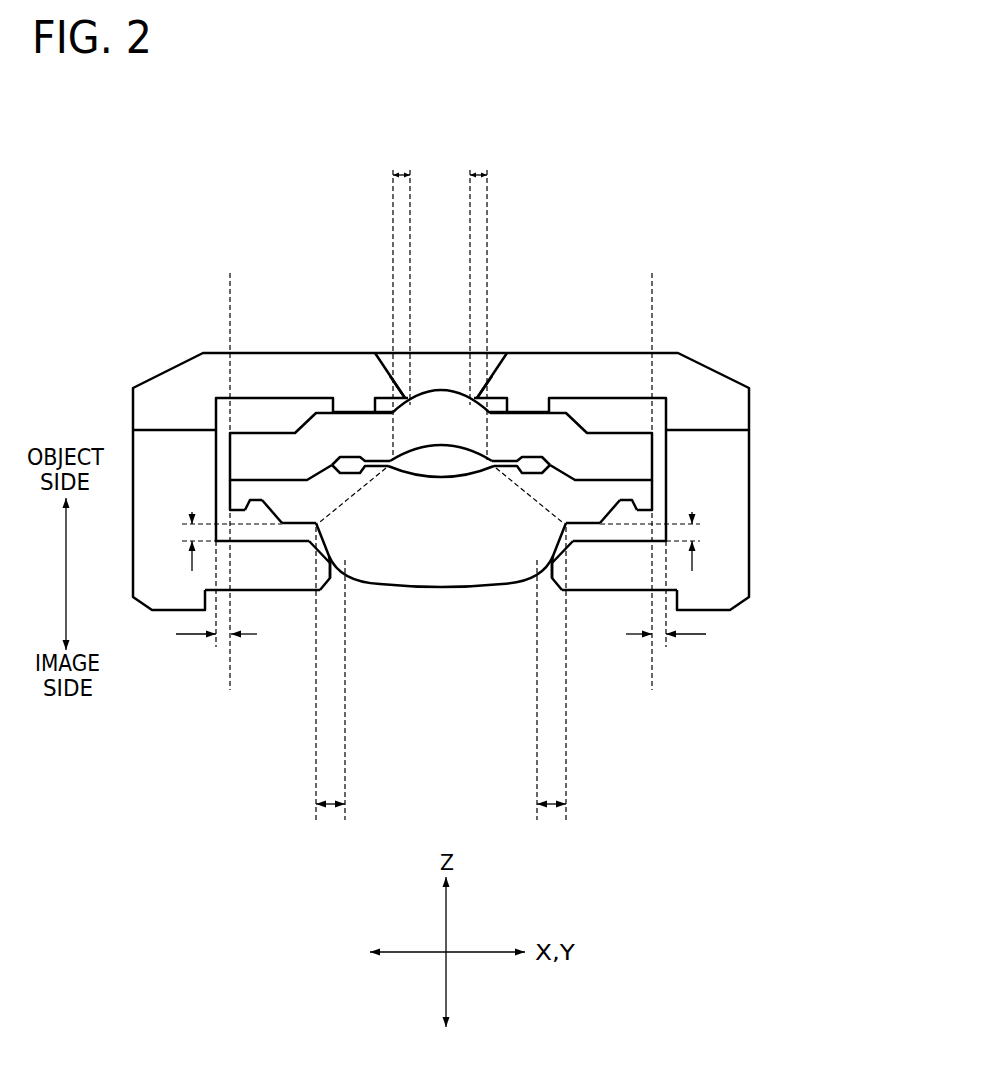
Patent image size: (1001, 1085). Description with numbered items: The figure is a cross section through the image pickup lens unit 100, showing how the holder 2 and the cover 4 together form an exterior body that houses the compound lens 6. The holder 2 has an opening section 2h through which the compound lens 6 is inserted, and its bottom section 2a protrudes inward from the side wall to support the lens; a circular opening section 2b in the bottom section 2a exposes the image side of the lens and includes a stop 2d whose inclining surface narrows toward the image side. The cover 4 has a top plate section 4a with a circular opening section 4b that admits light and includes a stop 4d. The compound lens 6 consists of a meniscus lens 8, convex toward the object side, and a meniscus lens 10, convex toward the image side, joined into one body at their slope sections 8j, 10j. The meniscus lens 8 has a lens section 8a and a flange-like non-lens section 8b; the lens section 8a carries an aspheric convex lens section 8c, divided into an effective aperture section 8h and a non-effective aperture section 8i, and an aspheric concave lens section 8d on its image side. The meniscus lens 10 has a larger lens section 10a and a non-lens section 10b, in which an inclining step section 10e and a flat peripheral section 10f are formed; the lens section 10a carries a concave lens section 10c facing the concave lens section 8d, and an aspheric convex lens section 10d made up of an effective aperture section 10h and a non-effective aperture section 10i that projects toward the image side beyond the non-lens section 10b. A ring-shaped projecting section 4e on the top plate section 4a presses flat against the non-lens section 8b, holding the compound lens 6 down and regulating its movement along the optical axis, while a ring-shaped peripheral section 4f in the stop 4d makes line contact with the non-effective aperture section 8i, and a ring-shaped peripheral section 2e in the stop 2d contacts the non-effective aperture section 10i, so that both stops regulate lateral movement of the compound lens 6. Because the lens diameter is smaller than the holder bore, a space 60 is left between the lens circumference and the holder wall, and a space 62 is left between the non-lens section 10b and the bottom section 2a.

The image pickup lens unit 100 is at (632, 148).
The holder 2 is at (757, 429).
The bottom section 2a is at (297, 582).
The opening section 2b is at (338, 572).
The stop 2d is at (441, 610).
The peripheral section 2e is at (330, 558).
The opening section 2h is at (216, 466).
The cover 4 is at (757, 347).
The top plate section 4a is at (267, 377).
The opening section 4b is at (398, 366).
The stop 4d is at (453, 354).
The projecting section 4e is at (353, 402).
The peripheral section 4f is at (477, 398).
The compound lens 6 is at (652, 268).
The meniscus lens 8 is at (441, 311).
The lens section 8a is at (487, 293).
The non-lens section 8b is at (393, 293).
The convex lens section 8c is at (442, 390).
The concave lens section 8d is at (432, 447).
The effective aperture section 8h is at (470, 208).
The non-effective aperture section 8i is at (440, 159).
The slope section 8j is at (330, 463).
The meniscus lens 10 is at (441, 657).
The lens section 10a is at (566, 662).
The non-lens section 10b is at (316, 662).
The concave lens section 10c is at (449, 478).
The convex lens section 10d is at (451, 592).
The step section 10e is at (273, 517).
The peripheral section 10f is at (242, 512).
The effective aperture section 10h is at (537, 771).
The non-effective aperture section 10i is at (444, 827).
The slope section 10j is at (316, 472).
The space 60 is at (441, 602).
The space 62 is at (442, 542).